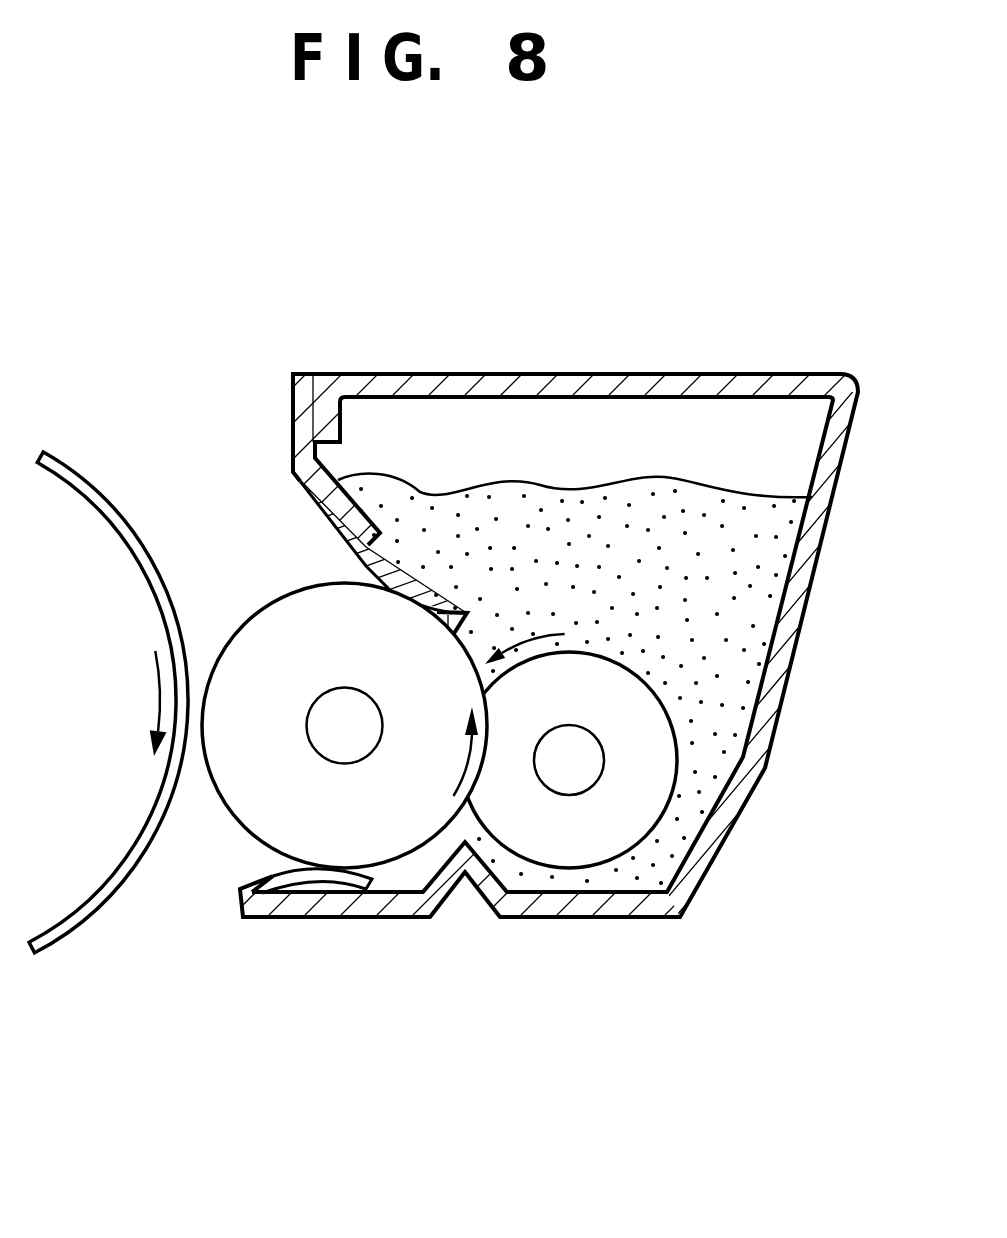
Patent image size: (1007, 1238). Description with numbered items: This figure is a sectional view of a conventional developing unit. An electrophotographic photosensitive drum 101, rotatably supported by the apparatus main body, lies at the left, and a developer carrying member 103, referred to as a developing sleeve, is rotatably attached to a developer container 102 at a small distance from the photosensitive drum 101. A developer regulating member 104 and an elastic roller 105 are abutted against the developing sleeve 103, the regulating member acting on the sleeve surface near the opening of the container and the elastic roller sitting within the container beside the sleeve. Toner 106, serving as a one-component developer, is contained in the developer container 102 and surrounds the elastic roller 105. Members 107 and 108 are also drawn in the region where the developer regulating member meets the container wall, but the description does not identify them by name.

The electrophotographic photosensitive drum 101 is at (73, 935).
The developer container 102 is at (772, 690).
The developer carrying member 103 is at (270, 822).
The developer regulating member 104 is at (195, 362).
The elastic roller 105 is at (572, 855).
The toner 106 is at (657, 497).
The blade supporting member 107 is at (295, 487).
The developer regulating blade 108 is at (362, 580).